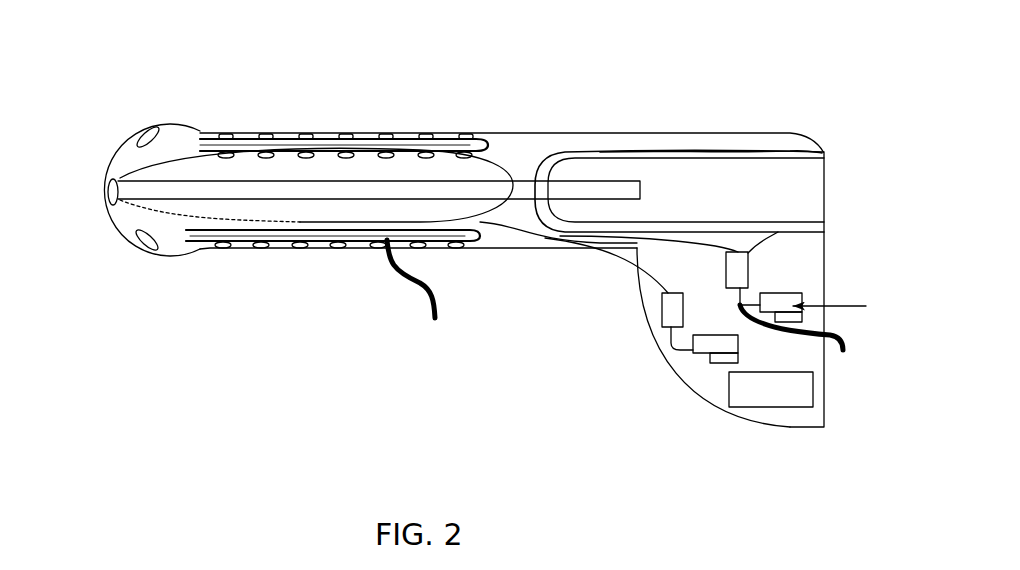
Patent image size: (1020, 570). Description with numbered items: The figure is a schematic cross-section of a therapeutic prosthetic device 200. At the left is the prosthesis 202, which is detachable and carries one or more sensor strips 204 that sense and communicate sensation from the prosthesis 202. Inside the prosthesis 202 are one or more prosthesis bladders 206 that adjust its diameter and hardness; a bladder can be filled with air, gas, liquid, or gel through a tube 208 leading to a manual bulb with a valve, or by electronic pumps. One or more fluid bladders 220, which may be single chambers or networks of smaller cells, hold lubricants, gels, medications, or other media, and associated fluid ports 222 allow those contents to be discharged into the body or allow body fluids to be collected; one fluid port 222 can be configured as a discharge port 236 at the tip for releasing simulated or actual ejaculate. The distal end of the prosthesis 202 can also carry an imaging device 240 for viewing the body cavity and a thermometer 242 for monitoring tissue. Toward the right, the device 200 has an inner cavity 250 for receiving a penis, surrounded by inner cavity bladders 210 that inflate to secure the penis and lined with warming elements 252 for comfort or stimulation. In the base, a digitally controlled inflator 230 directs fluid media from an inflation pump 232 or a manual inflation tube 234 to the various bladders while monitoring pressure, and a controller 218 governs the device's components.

The therapeutic prosthetic device 200 is at (494, 24).
The prosthesis 202 is at (258, 290).
The sensor strip 204 is at (135, 185).
The prosthesis bladder 206 is at (430, 167).
The tube 208 is at (450, 323).
The inner cavity bladder 210 is at (648, 147).
The controller 218 is at (772, 402).
The fluid bladder 220 is at (251, 160).
The fluid port 222 is at (306, 234).
The digitally controlled inflator 230 is at (722, 270).
The inflation pump 232 is at (690, 356).
The manual inflation tube 234 is at (813, 329).
The discharge port 236 is at (104, 198).
The imaging device 240 is at (120, 216).
The thermometer 242 is at (147, 127).
The inner cavity 250 is at (828, 200).
The warming element 252 is at (780, 151).